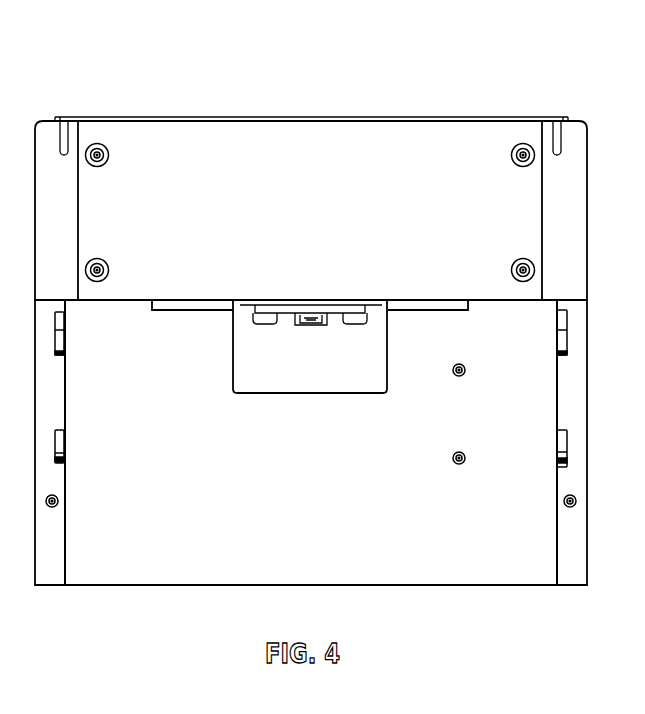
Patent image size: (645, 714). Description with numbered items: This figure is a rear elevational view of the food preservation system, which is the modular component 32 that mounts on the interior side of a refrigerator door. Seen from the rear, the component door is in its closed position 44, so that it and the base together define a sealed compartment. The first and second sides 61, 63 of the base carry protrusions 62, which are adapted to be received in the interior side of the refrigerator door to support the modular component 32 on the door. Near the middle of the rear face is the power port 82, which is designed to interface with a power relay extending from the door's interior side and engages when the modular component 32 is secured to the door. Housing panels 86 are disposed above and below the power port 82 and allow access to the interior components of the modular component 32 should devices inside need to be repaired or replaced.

The modular component 32 is at (163, 78).
The closed position 44 is at (604, 182).
The housing panels 86 is at (319, 208).
The power port 82 is at (308, 325).
The protrusions 62 is at (55, 330).
The first side 61 is at (576, 370).
The second side 63 is at (43, 366).